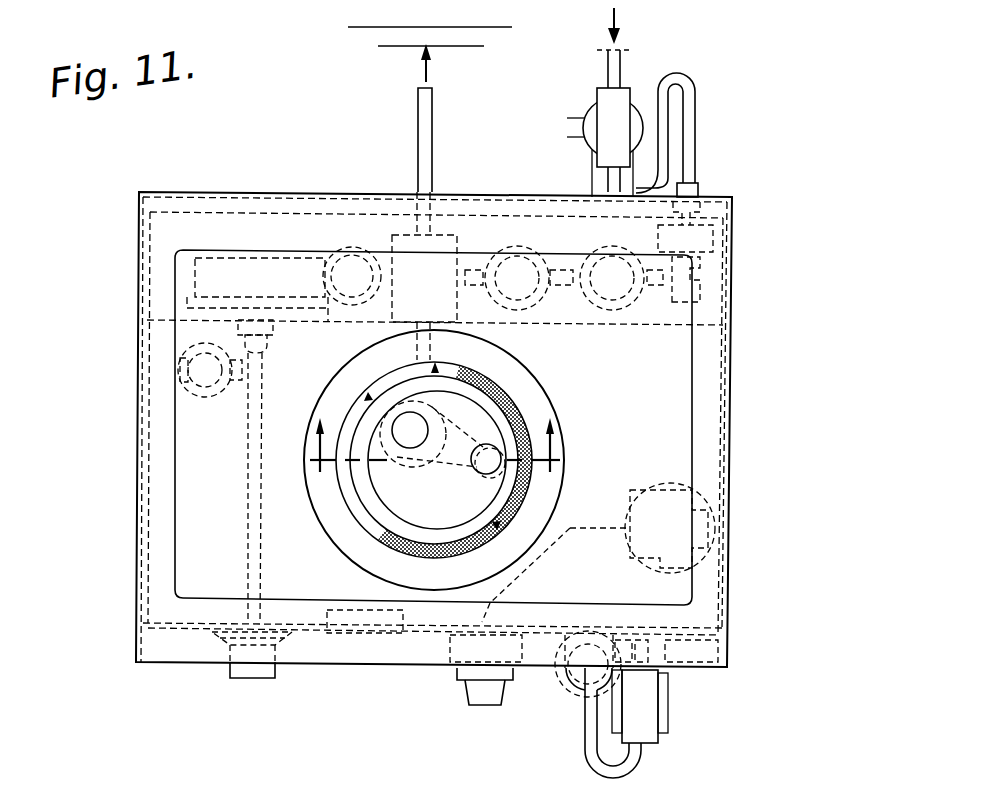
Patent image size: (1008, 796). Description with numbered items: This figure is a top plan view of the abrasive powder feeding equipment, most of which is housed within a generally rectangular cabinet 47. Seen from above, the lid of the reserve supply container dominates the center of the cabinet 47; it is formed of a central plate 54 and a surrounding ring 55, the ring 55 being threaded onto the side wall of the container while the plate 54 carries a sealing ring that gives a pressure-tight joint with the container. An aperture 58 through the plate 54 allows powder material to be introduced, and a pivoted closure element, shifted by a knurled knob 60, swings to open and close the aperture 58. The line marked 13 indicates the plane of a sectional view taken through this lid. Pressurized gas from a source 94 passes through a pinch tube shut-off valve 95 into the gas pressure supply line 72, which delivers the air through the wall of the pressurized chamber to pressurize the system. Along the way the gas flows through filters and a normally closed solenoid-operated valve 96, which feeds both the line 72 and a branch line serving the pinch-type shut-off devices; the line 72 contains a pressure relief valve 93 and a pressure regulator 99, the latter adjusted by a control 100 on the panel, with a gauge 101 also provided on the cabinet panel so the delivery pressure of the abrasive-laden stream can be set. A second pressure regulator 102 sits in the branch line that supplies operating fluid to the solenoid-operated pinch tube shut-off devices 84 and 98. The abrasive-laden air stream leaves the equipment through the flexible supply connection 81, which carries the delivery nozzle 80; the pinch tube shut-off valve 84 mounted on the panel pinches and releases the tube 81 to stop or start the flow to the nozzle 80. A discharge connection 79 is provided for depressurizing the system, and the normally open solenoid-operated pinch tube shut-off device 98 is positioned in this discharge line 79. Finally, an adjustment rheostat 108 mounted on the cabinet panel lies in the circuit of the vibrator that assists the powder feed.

The section line 13- 13 is at (435, 458).
The cabinet 47 is at (736, 353).
The central plate 54 is at (404, 514).
The surrounding ring 55 is at (507, 428).
The aperture 58 is at (410, 448).
The knurled knob 60 is at (481, 470).
The gas pressure supply line 72 is at (608, 67).
The discharge connection 79 is at (418, 150).
The delivery nozzle 80 is at (588, 668).
The supply connection 81 is at (590, 762).
The pinch tube shut-off valve 84 is at (664, 712).
The pressure relief valve 93 is at (702, 271).
The source of pressurized gas 94 is at (612, 22).
The pinch tube shut-off valve 95 is at (600, 97).
The solenoid-operated valve 96 is at (347, 248).
The pinch tube shut-off device 98 is at (459, 243).
The pressure regulator 99 is at (635, 503).
The control 100 is at (462, 693).
The gauge 101 is at (335, 638).
The pressure regulator 102 is at (182, 388).
The adjustment rheostat 108 is at (232, 238).